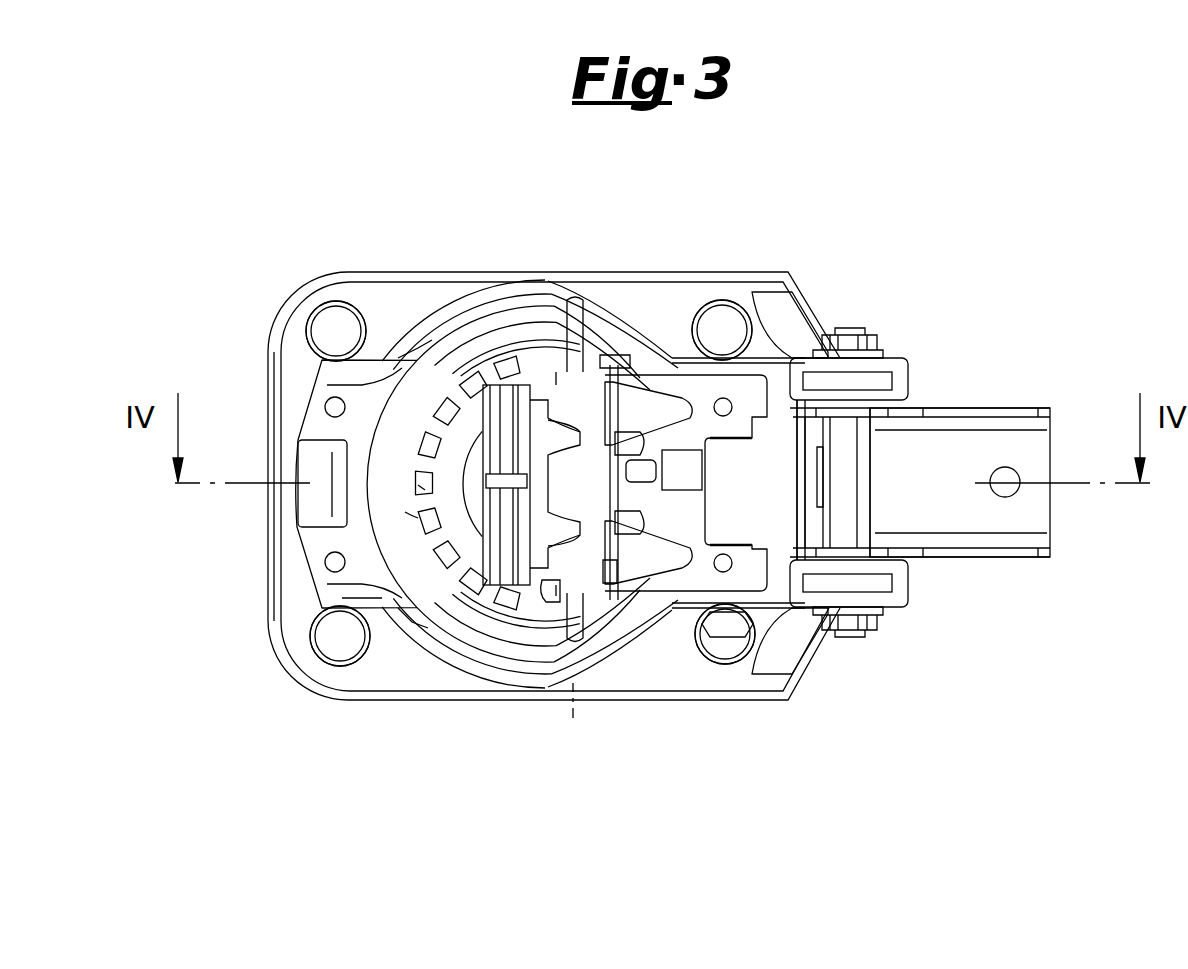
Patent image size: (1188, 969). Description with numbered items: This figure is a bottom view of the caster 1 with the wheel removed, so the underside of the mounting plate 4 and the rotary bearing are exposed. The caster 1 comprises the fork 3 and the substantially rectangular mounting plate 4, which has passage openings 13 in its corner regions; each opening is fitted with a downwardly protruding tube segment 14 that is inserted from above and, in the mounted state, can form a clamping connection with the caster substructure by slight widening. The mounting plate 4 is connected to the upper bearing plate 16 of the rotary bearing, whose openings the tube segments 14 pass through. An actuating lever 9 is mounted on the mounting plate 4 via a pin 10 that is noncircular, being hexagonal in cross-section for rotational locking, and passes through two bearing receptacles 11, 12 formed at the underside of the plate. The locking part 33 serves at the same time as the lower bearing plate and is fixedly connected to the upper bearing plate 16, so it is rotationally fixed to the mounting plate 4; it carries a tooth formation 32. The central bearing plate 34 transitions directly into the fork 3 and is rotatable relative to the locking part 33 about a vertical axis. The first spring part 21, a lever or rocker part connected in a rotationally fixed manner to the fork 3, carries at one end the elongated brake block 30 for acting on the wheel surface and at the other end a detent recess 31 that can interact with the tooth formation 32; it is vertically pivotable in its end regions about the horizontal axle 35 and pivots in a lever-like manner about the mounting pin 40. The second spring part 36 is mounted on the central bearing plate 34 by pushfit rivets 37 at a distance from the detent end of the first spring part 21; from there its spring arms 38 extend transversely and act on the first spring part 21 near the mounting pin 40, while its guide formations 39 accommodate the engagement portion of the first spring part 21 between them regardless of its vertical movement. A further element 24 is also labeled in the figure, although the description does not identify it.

The caster 1 is at (822, 208).
The fork 3 is at (417, 350).
The mounting plate 4 is at (297, 378).
The actuating lever 9 is at (1008, 445).
The pin 10 is at (848, 455).
The bearing receptacle 11 is at (900, 375).
The bearing receptacle 12 is at (900, 590).
The passage openings 13 is at (322, 330).
The tube segments 14 is at (333, 302).
The upper bearing plate 16 is at (433, 320).
The first spring part 21 is at (557, 580).
The spacer 24 is at (830, 457).
The brake block 30 is at (500, 582).
The detent recess 31 is at (633, 560).
The tooth formation 32 is at (426, 490).
The locking part 33 is at (493, 365).
The central bearing plate 34 is at (412, 517).
The horizontal axle 35 is at (567, 633).
The second spring part 36 is at (747, 577).
The pushfit rivets 37 is at (722, 399).
The spring arms 38 is at (652, 390).
The guide formations 39 is at (660, 447).
The mounting pin 40 is at (557, 383).